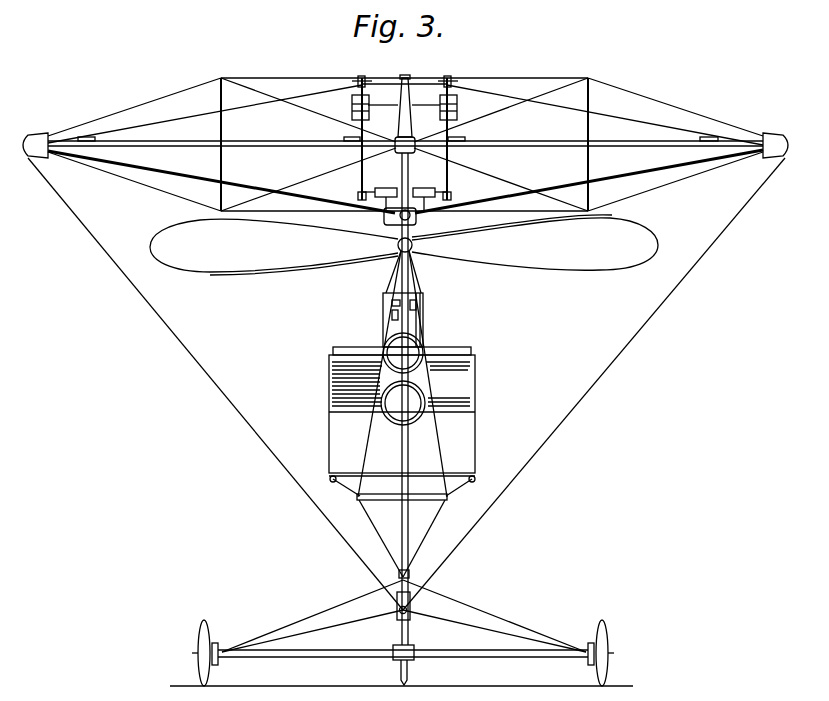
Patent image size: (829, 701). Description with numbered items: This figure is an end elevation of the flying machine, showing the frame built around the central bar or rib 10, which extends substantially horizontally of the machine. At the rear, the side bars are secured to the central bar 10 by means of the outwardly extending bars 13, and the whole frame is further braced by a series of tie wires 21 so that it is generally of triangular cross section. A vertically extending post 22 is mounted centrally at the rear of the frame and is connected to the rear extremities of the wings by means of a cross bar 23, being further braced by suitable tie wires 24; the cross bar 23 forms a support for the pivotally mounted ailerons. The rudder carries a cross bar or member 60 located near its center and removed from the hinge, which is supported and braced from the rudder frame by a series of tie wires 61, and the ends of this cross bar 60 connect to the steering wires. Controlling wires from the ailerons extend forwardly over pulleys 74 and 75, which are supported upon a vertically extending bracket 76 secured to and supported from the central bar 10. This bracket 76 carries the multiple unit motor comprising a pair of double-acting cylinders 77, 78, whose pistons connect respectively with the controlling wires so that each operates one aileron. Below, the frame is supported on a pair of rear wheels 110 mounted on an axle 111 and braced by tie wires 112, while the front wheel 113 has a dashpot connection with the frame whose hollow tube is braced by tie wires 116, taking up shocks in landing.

The central bar or rib 10 is at (418, 220).
The outwardly extending bars 13 is at (183, 178).
The tie wires 21 is at (272, 454).
The vertically extending post 22 is at (408, 100).
The cross bar 23 is at (265, 135).
The tie wires 24 is at (617, 115).
The cross bar or member 60 is at (418, 502).
The tie wires 61 is at (372, 520).
The pulley 74 is at (361, 76).
The pulley 75 is at (361, 197).
The vertically extending bracket 76 is at (391, 108).
The cylinder 77 is at (457, 104).
The cylinder 78 is at (352, 103).
The rear wheels 110 is at (197, 668).
The axle 111 is at (338, 661).
The tie wires 112 is at (397, 627).
The front wheel 113 is at (414, 662).
The tie wires 116 is at (328, 611).